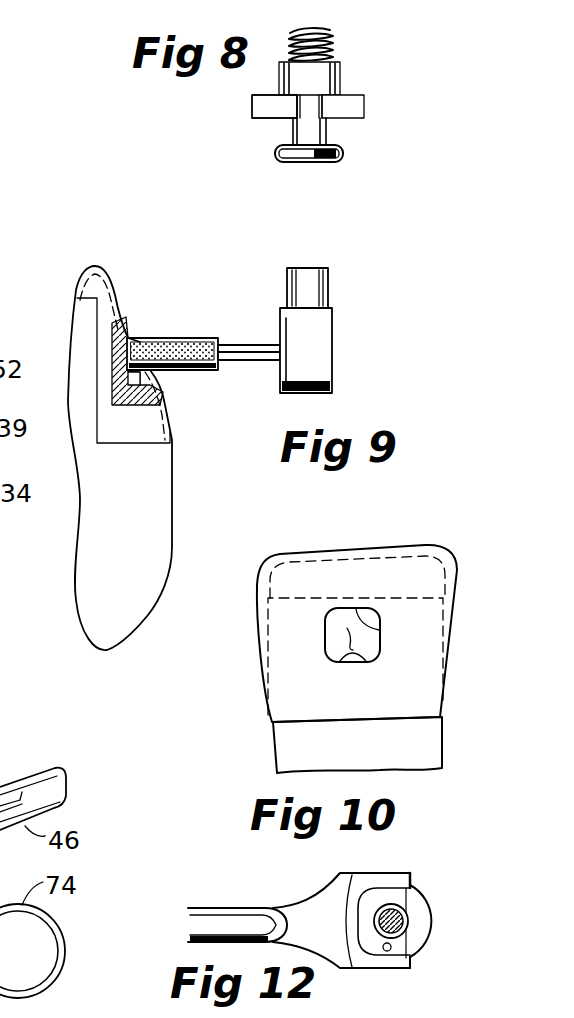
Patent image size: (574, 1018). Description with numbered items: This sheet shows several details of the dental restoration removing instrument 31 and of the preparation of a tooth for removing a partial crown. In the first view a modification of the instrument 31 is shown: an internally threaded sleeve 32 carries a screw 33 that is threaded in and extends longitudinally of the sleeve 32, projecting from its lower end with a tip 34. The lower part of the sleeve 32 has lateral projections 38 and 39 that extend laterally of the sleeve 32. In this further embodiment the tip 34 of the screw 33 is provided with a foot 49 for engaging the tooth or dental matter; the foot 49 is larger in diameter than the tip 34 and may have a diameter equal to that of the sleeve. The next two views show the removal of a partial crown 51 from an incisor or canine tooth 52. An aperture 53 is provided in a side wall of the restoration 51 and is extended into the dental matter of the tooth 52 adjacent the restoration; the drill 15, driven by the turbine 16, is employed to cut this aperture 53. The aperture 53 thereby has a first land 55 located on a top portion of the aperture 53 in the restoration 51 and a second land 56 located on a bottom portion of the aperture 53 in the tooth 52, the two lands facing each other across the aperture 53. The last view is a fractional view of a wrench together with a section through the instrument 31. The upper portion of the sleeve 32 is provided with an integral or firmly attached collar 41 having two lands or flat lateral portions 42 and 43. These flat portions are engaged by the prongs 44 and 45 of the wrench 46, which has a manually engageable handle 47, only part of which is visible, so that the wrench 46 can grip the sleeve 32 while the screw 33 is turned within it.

In FIG. 9, the drill 15 is at (193, 338).
In FIG. 9, the turbine 16 is at (332, 341).
In FIG. 8, the dental restoration removing instrument 31 is at (256, 141).
In FIG. 12, the dental restoration removing instrument 31 is at (431, 955).
In FIG. 8, the internally threaded sleeve 32 is at (340, 72).
In FIG. 12, the internally threaded sleeve 32 is at (405, 908).
In FIG. 8, the screw 33 is at (295, 30).
In FIG. 12, the screw 33 is at (400, 932).
In FIG. 8, the tip 34 is at (333, 128).
In FIG. 8, the lateral projection 38 is at (252, 112).
In FIG. 8, the lateral projection 39 is at (367, 107).
In FIG. 12, the collar 41 is at (433, 920).
In FIG. 12, the land 42 is at (390, 951).
In FIG. 12, the land 43 is at (417, 895).
In FIG. 12, the prong 44 is at (377, 970).
In FIG. 12, the prong 45 is at (410, 873).
In FIG. 12, the wrench 46 is at (313, 887).
In FIG. 12, the handle 47 is at (240, 906).
In FIG. 8, the foot 49 is at (345, 157).
In FIG. 9, the partial crown 51 is at (177, 425).
In FIG. 10, the partial crown 51 is at (256, 667).
In FIG. 9, the tooth 52 is at (172, 473).
In FIG. 10, the tooth 52 is at (273, 751).
In FIG. 9, the aperture 53 is at (128, 373).
In FIG. 10, the aperture 53 is at (345, 636).
In FIG. 9, the first land 55 is at (140, 342).
In FIG. 10, the first land 55 is at (365, 628).
In FIG. 9, the second land 56 is at (147, 375).
In FIG. 10, the second land 56 is at (343, 662).